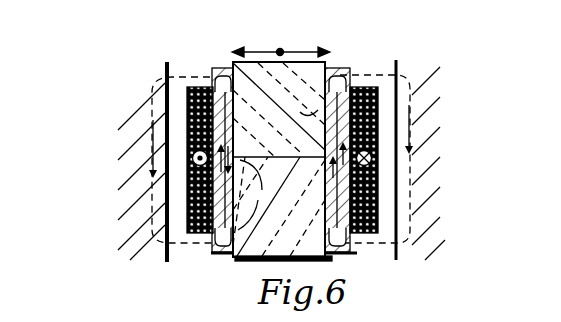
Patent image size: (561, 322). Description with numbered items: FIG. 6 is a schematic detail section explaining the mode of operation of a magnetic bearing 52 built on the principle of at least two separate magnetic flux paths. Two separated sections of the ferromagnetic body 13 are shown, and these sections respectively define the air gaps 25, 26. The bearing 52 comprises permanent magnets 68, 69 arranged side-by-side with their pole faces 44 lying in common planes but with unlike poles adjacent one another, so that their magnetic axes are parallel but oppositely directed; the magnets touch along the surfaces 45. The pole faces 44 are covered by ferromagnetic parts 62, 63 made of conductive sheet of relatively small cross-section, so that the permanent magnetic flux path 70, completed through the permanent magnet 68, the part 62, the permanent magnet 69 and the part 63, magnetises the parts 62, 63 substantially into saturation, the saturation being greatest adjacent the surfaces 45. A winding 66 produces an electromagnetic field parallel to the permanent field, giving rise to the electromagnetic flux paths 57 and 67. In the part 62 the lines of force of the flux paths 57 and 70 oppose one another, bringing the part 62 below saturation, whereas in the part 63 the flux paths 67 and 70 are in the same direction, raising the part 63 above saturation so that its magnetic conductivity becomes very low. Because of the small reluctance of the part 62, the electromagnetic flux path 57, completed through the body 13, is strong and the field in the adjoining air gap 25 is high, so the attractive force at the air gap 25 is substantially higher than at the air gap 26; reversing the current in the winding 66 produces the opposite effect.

The ferromagnetic body 13 is at (143, 232).
The air gap 25 is at (167, 127).
The air gap 26 is at (390, 137).
The pole faces 44 is at (200, 115).
The surfaces 45 is at (190, 202).
The bearing 52 is at (341, 60).
The electromagnetic flux path 57 is at (157, 187).
The ferromagnetic part 62 is at (223, 255).
The ferromagnetic part 63 is at (343, 255).
The winding 66 is at (368, 117).
The electromagnetic flux path 67 is at (410, 173).
The permanent magnet 68 is at (360, 75).
The permanent magnet 69 is at (262, 257).
The permanent magnetic flux path 70 is at (236, 60).